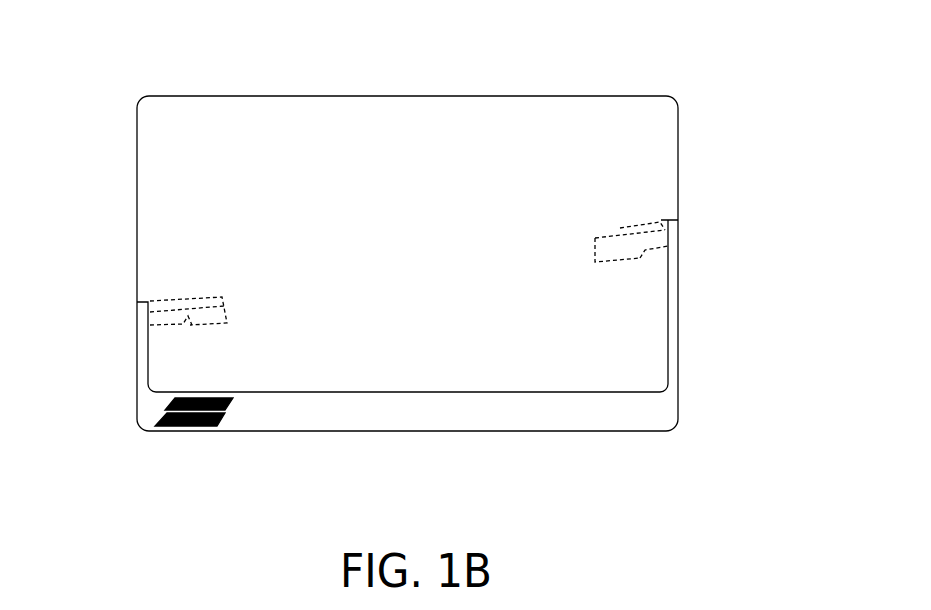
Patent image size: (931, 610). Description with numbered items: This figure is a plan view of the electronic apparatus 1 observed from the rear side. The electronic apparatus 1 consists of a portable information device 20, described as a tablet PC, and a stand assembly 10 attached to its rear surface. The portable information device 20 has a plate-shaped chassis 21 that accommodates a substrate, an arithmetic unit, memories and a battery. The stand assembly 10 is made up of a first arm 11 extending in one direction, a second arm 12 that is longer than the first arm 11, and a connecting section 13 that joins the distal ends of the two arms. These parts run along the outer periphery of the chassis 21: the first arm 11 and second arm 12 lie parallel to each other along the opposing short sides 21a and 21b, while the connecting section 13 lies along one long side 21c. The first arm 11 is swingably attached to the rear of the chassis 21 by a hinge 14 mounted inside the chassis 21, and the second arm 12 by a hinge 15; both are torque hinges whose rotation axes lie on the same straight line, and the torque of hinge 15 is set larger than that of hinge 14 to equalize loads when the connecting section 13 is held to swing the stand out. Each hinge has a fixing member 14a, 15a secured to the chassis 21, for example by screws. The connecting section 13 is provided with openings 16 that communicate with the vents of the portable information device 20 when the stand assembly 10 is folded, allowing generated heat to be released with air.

The electronic apparatus 1 is at (697, 53).
The stand assembly 10 is at (685, 347).
The first arm 11 is at (137, 357).
The second arm 12 is at (670, 300).
The connecting section 13 is at (590, 410).
The hinge 14 is at (196, 295).
The fixing member 14a is at (148, 321).
The hinge 15 is at (619, 226).
The fixing member 15a is at (668, 248).
The openings 16 is at (172, 432).
The portable information device 20 is at (685, 104).
The chassis 21 is at (597, 94).
The short side 21a is at (137, 157).
The short side 21b is at (678, 153).
The long side 21c is at (437, 433).